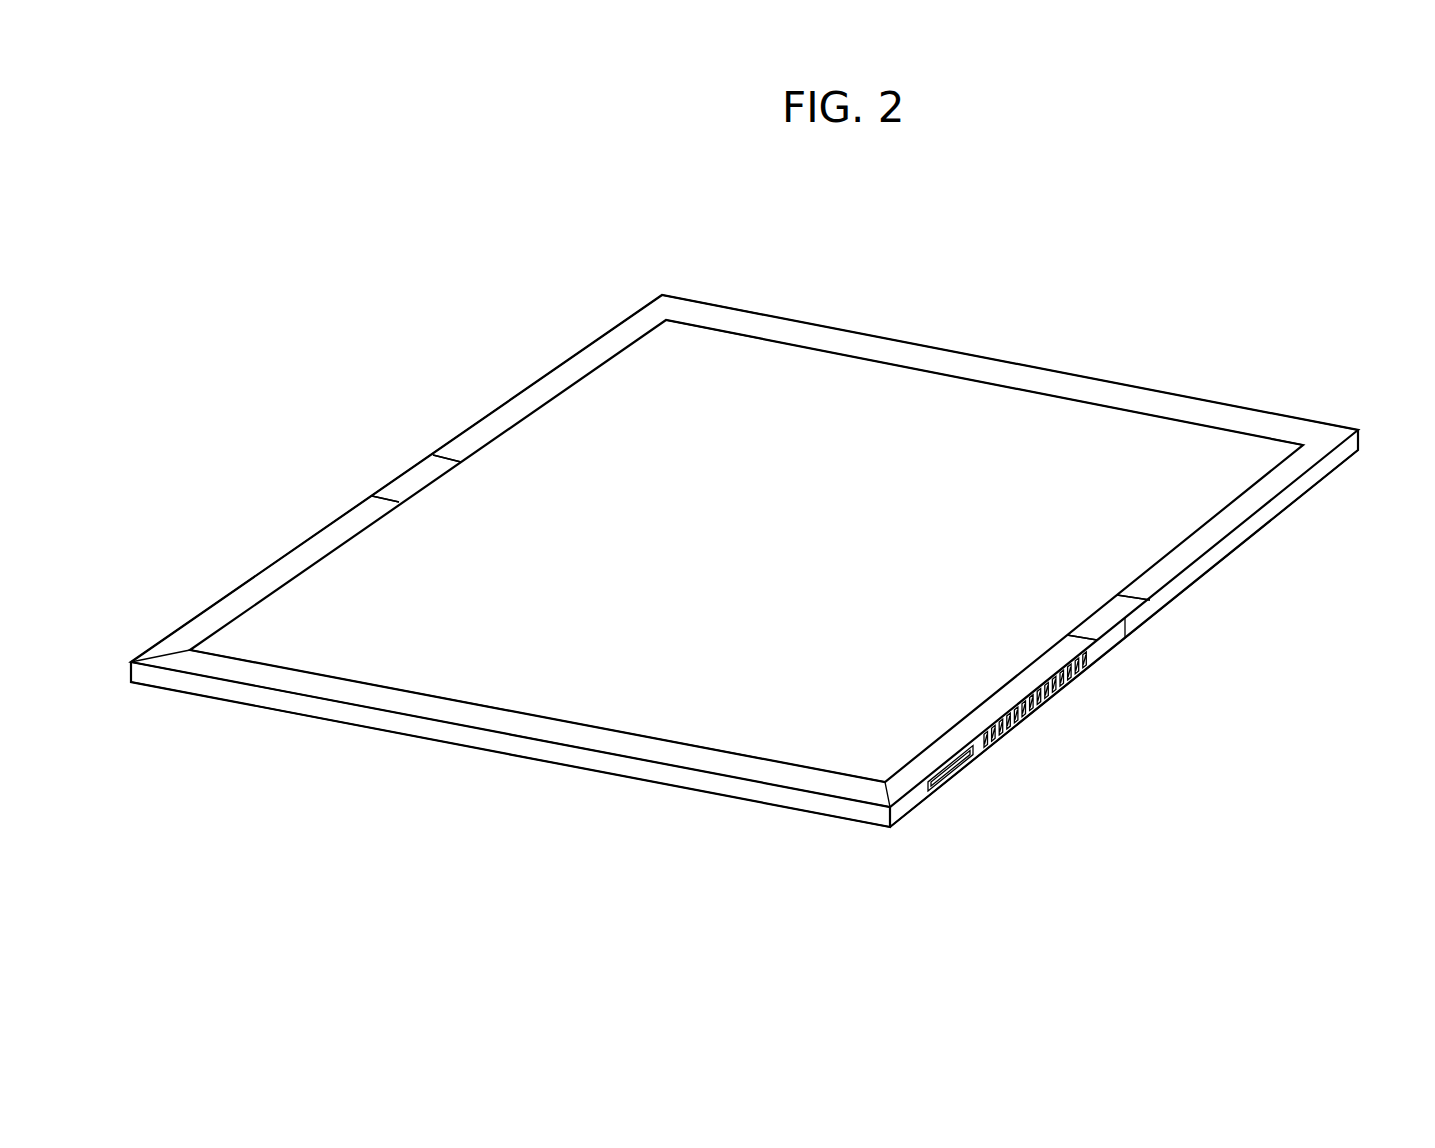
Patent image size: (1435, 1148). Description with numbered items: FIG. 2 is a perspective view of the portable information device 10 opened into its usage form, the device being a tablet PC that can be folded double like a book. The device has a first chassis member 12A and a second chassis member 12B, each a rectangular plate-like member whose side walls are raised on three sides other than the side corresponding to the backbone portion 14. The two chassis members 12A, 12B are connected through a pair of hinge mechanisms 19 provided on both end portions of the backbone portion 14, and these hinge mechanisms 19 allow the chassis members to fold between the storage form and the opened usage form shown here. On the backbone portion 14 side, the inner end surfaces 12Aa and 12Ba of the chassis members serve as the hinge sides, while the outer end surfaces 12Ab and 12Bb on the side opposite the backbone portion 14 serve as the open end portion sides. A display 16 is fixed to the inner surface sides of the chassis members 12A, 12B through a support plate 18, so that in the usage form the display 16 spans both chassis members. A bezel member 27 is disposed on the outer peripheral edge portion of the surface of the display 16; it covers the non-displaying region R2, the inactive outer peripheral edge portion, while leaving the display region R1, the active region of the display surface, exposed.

The portable information device 10 is at (257, 309).
The first chassis member 12A is at (270, 563).
The second chassis member 12B is at (540, 382).
The inner end surface 12Aa is at (1148, 623).
The outer end surface 12Ab is at (632, 770).
The inner end surface 12Ba is at (1124, 626).
The outer end surface 12Bb is at (1360, 436).
The backbone portion 14 is at (761, 547).
The display 16 is at (806, 362).
The support plate 18 is at (905, 398).
The hinge mechanism 19 is at (407, 480).
The bezel member 27 is at (1199, 553).
The display region R1 is at (413, 682).
The non-displaying region R2 is at (1005, 373).